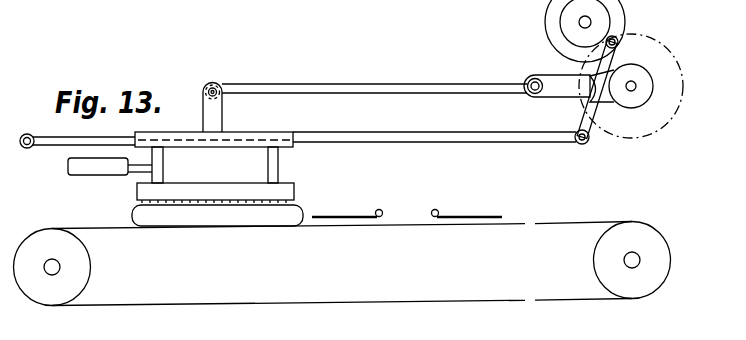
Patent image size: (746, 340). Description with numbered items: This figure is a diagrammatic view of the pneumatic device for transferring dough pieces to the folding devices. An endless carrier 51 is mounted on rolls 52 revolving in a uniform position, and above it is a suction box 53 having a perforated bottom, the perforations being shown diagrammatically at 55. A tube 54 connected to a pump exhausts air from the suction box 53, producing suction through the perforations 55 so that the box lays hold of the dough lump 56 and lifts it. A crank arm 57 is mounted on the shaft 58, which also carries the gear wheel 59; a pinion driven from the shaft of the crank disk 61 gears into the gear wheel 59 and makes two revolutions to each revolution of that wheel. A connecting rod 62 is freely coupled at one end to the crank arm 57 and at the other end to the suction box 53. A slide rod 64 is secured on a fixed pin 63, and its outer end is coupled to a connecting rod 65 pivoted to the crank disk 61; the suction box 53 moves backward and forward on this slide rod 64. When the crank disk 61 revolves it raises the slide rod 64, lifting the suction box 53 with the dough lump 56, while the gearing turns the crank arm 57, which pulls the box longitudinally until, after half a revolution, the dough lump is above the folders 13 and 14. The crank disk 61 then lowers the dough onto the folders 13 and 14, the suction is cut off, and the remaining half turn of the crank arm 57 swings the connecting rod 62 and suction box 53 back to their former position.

The folder 13 is at (352, 212).
The folder 14 is at (457, 213).
The endless carrier 51 is at (380, 282).
The rolls 52 is at (91, 271).
The suction box 53 is at (278, 167).
The tube 54 is at (90, 166).
The perforations 55 is at (197, 197).
The dough lump 56 is at (254, 212).
The crank arm 57 is at (577, 92).
The shaft 58 is at (634, 89).
The gear wheel 59 is at (673, 117).
The crank disk 61 is at (546, 22).
The connecting rod 62 is at (412, 83).
The fixed pin 63 is at (27, 148).
The slide rod 64 is at (490, 110).
The connecting rod 65 is at (600, 131).